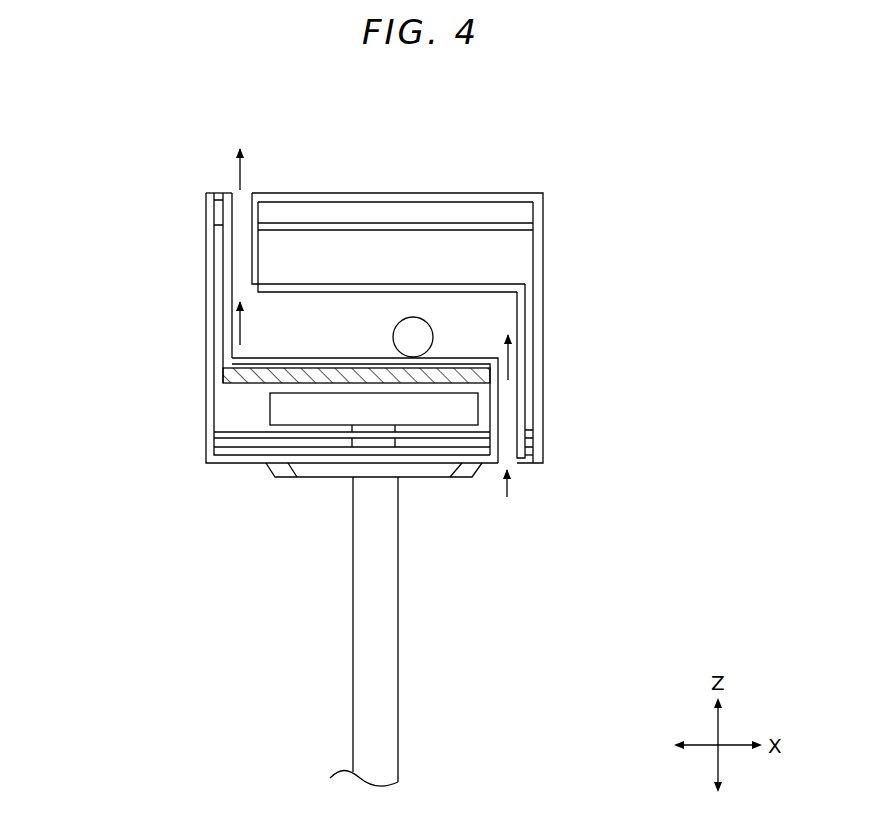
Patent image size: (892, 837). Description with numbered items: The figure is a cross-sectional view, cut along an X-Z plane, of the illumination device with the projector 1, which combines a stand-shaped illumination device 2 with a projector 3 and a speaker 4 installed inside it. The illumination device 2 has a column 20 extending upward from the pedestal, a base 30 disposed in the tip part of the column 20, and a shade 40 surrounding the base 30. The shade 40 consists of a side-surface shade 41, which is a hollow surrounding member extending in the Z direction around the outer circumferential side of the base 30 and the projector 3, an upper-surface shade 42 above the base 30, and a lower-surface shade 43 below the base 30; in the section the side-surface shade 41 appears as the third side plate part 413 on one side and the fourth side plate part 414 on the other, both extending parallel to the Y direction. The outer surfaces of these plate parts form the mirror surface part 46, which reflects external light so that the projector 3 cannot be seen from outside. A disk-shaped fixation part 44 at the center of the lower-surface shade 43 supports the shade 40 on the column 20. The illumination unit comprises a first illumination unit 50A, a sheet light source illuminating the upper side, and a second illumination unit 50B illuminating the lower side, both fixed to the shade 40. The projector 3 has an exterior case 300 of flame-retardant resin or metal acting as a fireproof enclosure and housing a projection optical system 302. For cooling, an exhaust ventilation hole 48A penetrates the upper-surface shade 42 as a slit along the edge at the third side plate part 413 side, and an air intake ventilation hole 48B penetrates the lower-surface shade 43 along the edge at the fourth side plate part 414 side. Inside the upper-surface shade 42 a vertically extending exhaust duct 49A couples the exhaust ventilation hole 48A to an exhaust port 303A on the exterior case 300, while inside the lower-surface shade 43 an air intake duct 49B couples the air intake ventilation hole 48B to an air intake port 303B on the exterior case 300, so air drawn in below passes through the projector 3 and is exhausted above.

The illumination device with the projector 1 is at (153, 153).
The illumination device 2 is at (415, 190).
The projector 3 is at (535, 300).
The speaker 4 is at (266, 406).
The column 20 is at (400, 672).
The base 30 is at (225, 375).
The shade 40 is at (473, 190).
The side-surface shade 41 is at (548, 341).
The upper-surface shade 42 is at (512, 191).
The lower-surface shade 43 is at (232, 458).
The fixation part 44 is at (292, 478).
The mirror surface part 46 is at (207, 218).
The exhaust ventilation hole 48A is at (244, 188).
The air intake ventilation hole 48B is at (504, 466).
The exhaust duct 49A is at (228, 247).
The air intake duct 49B is at (530, 414).
The first illumination unit 50A is at (518, 223).
The second illumination unit 50B is at (222, 433).
The exterior case 300 is at (506, 283).
The projection optical system 302 is at (393, 338).
The exhaust port 303A is at (238, 290).
The air intake port 303B is at (518, 383).
The third side plate part 413 is at (206, 330).
The fourth side plate part 414 is at (545, 436).